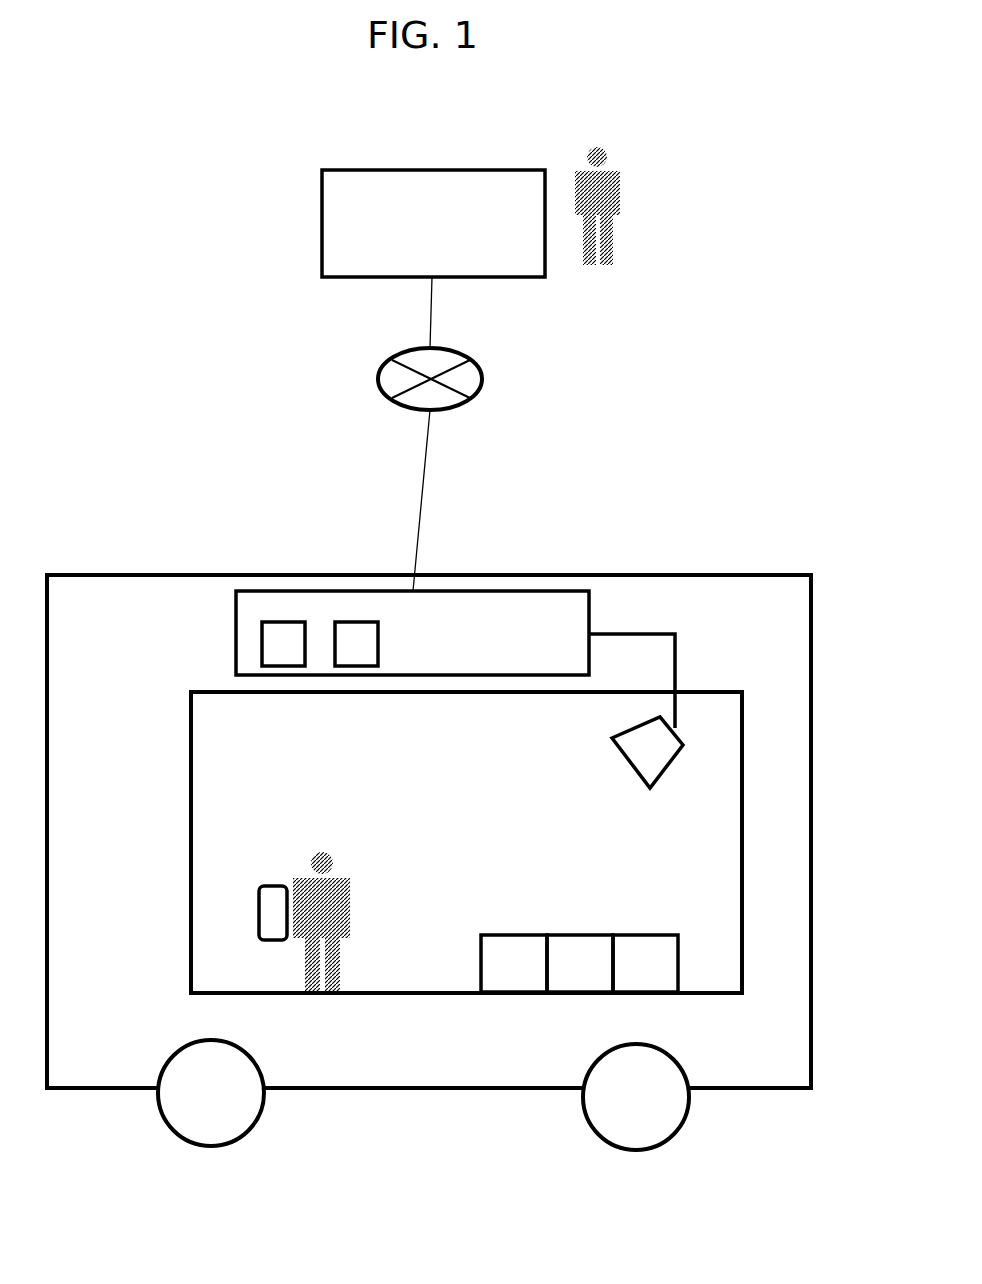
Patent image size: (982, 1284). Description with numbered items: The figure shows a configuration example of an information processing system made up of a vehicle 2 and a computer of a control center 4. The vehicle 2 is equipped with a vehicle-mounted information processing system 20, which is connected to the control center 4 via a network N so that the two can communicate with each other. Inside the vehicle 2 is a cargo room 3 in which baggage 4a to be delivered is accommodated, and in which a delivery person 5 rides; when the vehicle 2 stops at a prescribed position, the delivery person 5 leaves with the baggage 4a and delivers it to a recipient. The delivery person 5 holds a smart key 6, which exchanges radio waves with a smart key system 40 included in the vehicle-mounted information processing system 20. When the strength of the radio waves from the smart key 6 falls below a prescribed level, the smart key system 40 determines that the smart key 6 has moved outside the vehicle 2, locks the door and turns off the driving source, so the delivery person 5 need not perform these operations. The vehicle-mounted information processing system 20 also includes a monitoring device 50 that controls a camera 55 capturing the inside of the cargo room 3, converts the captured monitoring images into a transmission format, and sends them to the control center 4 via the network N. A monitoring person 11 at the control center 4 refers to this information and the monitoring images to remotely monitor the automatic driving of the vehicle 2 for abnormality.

The vehicle 2 is at (770, 575).
The cargo room 3 is at (743, 872).
The control center 4 is at (468, 170).
The baggage 4a is at (495, 935).
The delivery person 5 is at (350, 898).
The smart key 6 is at (261, 885).
The monitoring person 11 is at (620, 185).
The vehicle-mounted information processing system 20 is at (530, 590).
The smart key system 40 is at (283, 621).
The monitoring device 50 is at (355, 621).
The camera 55 is at (663, 774).
The network N is at (484, 368).